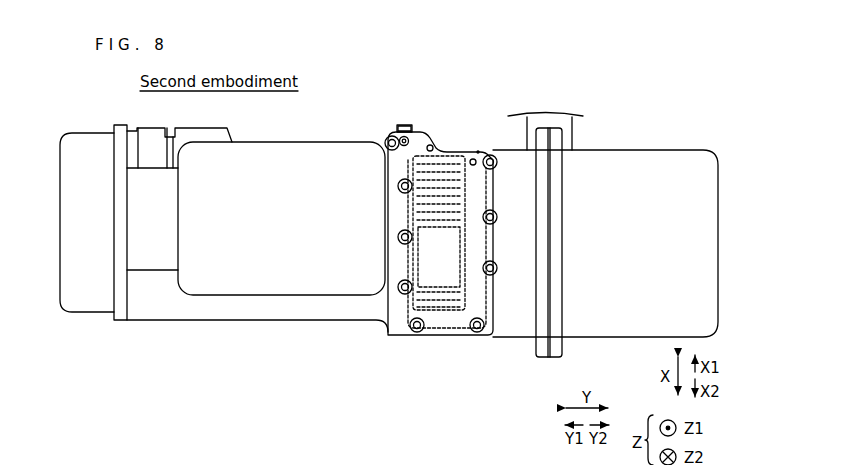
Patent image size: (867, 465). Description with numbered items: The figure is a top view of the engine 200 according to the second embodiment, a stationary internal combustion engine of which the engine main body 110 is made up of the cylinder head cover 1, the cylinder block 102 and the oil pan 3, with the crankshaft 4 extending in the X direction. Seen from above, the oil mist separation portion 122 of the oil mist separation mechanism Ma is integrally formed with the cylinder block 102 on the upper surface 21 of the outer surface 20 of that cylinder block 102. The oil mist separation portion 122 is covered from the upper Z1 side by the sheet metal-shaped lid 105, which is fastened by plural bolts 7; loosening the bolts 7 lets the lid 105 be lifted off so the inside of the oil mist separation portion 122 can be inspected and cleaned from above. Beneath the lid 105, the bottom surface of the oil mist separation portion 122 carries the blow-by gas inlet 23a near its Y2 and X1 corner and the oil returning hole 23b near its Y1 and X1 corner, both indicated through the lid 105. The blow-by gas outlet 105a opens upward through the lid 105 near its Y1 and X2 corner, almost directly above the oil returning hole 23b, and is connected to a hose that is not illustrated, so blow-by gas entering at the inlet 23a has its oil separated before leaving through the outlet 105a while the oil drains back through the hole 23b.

The cylinder head cover 1 is at (63, 256).
The cylinder block 102 is at (282, 303).
The oil mist separation portion 122 is at (434, 244).
The lid 105 is at (446, 158).
The blow-by gas outlet 105a is at (405, 126).
The blow-by gas inlet 23a is at (477, 150).
The oil returning hole 23b is at (400, 138).
The bolts 7 is at (397, 238).
The oil pan 3 is at (618, 302).
The upper surface 21 is at (525, 263).
The outer surface 20 is at (518, 318).
The crankshaft 4 is at (546, 122).
The engine main body 110 is at (604, 112).
The engine 200 is at (674, 78).